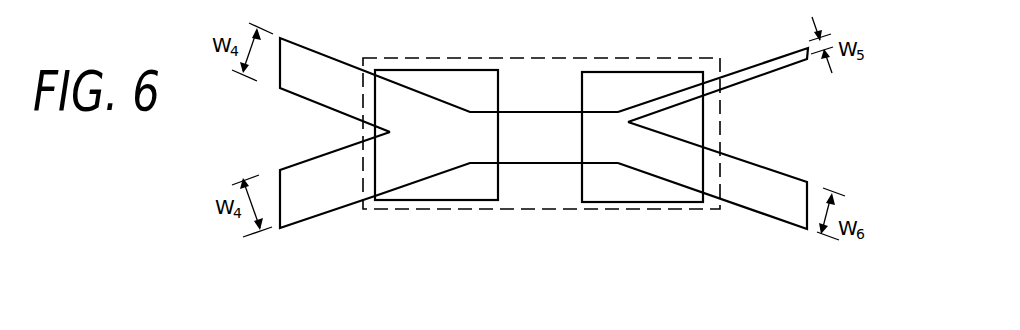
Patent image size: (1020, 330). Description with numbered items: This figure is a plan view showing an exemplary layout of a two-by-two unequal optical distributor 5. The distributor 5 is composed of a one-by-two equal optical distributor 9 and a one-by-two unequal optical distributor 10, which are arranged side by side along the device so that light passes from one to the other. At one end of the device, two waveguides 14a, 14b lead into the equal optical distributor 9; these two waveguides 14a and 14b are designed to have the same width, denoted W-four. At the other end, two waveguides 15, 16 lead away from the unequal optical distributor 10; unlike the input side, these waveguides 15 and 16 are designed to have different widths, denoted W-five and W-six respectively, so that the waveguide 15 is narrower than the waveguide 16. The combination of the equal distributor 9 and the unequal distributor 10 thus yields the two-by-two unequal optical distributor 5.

The 2×2 unequal optical distributor 5 is at (608, 211).
The 1×2 equal optical distributor 9 is at (420, 68).
The 1×2 unequal optical distributor 10 is at (660, 70).
The waveguide 14a is at (313, 60).
The waveguide 14b is at (298, 212).
The waveguide 15 is at (760, 63).
The waveguide 16 is at (753, 201).